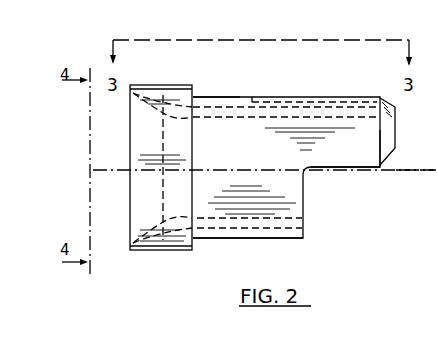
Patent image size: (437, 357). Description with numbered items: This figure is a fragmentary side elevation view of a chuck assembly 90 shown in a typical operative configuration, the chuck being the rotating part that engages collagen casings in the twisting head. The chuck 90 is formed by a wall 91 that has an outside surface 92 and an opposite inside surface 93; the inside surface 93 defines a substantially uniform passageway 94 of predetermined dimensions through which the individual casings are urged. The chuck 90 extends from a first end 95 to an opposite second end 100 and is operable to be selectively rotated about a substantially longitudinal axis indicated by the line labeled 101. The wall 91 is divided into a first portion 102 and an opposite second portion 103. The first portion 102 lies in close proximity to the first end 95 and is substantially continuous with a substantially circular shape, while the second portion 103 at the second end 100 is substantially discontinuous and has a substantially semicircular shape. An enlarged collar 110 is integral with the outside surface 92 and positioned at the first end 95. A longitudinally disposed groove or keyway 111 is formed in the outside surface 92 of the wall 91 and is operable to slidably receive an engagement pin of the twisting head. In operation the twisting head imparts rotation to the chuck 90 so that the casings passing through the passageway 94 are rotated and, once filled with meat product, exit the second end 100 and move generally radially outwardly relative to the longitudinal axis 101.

The chuck assembly 90 is at (252, 82).
The wall 91 is at (282, 185).
The outside surface 92 is at (345, 140).
The inside surface 93 is at (205, 211).
The passageway 94 is at (255, 205).
The first end 95 is at (213, 96).
The second end 100 is at (358, 97).
The longitudinal axis 101 is at (426, 168).
The first portion 102 is at (236, 240).
The second portion 103 is at (351, 177).
The enlarged collar 110 is at (150, 252).
The groove or keyway 111 is at (296, 96).